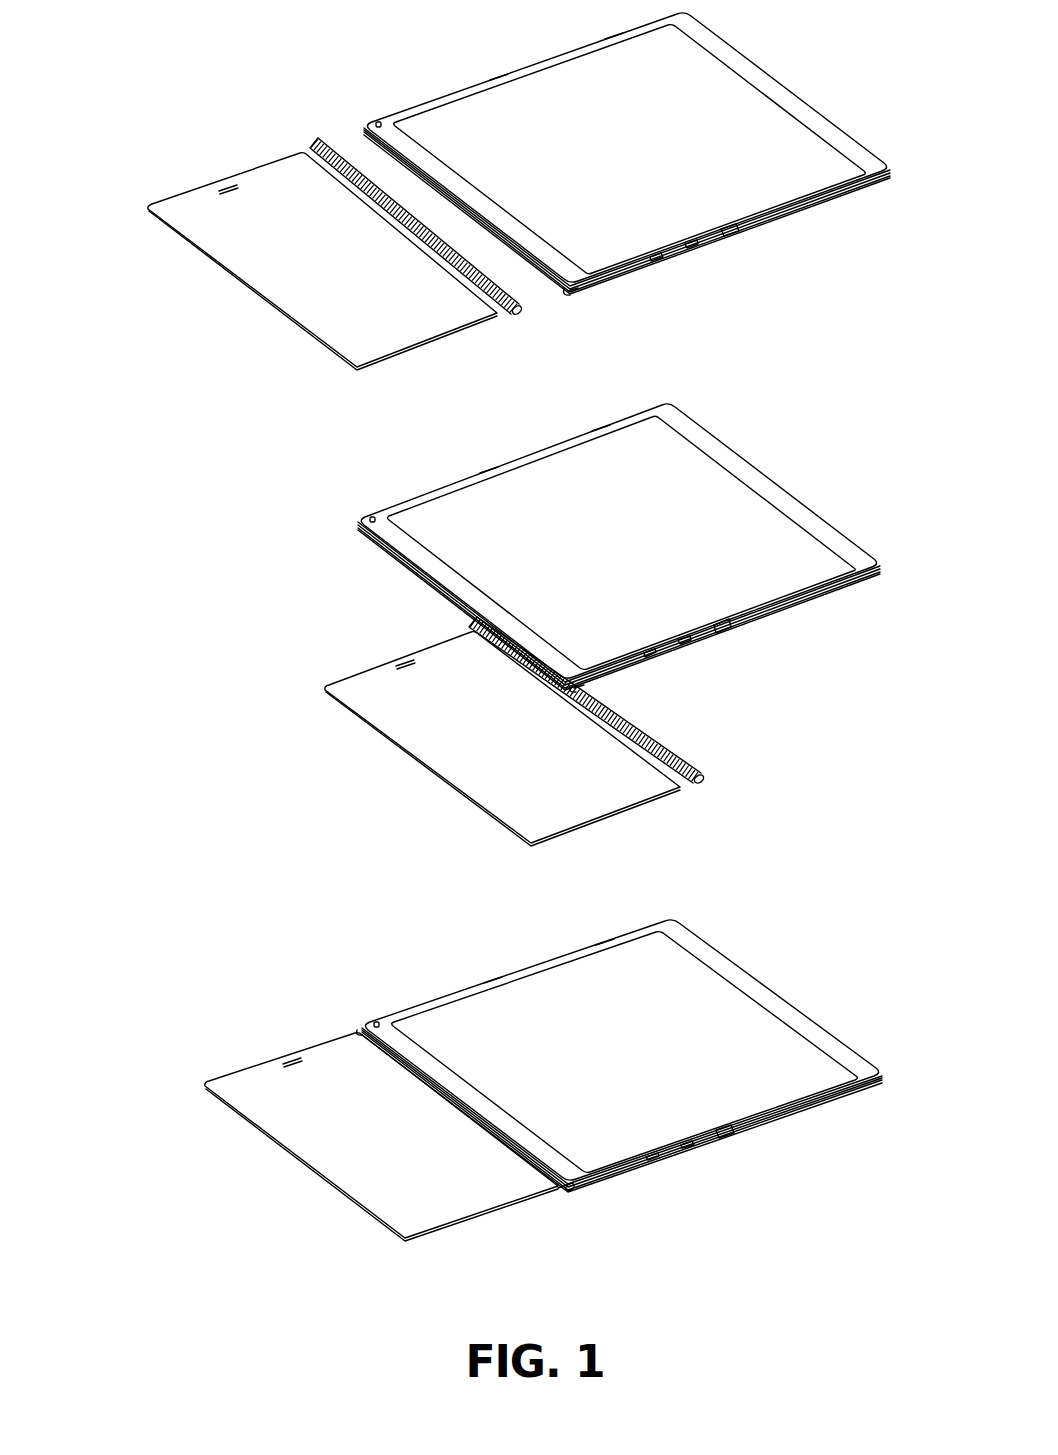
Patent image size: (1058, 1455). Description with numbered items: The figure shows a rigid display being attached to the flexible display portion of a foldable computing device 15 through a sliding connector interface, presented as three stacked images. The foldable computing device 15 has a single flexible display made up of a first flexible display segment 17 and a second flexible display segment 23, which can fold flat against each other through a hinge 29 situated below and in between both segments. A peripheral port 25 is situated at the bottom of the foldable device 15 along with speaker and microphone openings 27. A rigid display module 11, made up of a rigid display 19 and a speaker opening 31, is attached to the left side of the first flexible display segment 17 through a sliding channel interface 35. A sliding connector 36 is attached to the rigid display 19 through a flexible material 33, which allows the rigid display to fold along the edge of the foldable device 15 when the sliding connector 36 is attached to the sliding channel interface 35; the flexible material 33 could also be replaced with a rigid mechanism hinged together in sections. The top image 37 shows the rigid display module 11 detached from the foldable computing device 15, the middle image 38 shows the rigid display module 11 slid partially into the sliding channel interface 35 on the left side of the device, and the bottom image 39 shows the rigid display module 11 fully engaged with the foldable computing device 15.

The rigid display module 11 is at (401, 679).
The foldable computing device 15 is at (820, 119).
The first flexible display segment 17 is at (473, 93).
The rigid display 19 is at (414, 679).
The second flexible display segment 23 is at (615, 45).
The peripheral port 25 is at (657, 262).
The speaker and microphone openings 27 is at (693, 249).
The hinge 29 is at (735, 234).
The speaker opening 31 is at (229, 185).
The flexible material 33 is at (528, 685).
The sliding channel interface 35 is at (577, 294).
The sliding connector 36 is at (522, 312).
The top image 37 is at (764, 39).
The middle image 38 is at (746, 425).
The bottom image 39 is at (747, 932).